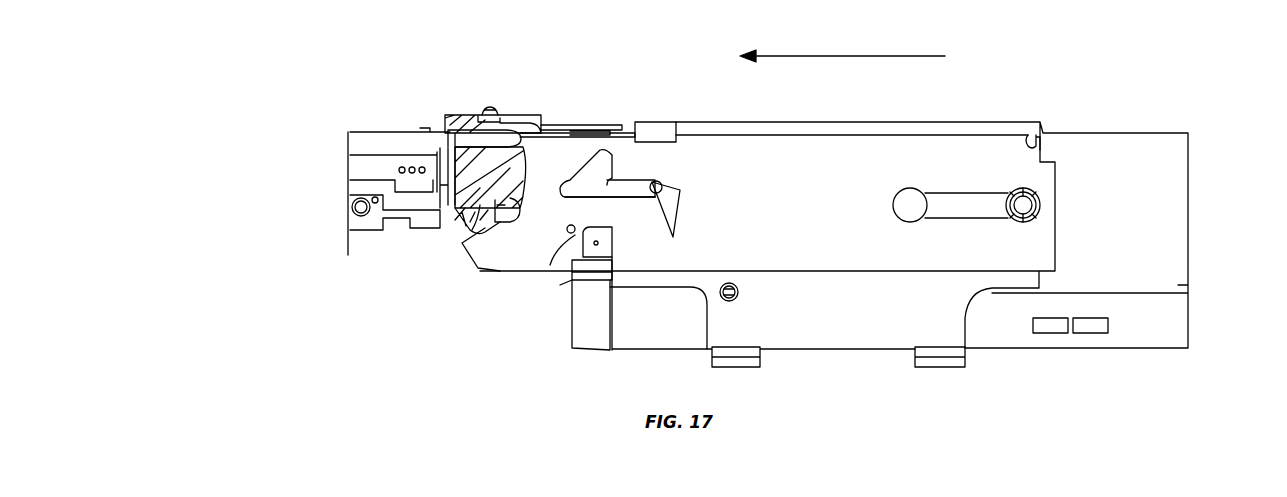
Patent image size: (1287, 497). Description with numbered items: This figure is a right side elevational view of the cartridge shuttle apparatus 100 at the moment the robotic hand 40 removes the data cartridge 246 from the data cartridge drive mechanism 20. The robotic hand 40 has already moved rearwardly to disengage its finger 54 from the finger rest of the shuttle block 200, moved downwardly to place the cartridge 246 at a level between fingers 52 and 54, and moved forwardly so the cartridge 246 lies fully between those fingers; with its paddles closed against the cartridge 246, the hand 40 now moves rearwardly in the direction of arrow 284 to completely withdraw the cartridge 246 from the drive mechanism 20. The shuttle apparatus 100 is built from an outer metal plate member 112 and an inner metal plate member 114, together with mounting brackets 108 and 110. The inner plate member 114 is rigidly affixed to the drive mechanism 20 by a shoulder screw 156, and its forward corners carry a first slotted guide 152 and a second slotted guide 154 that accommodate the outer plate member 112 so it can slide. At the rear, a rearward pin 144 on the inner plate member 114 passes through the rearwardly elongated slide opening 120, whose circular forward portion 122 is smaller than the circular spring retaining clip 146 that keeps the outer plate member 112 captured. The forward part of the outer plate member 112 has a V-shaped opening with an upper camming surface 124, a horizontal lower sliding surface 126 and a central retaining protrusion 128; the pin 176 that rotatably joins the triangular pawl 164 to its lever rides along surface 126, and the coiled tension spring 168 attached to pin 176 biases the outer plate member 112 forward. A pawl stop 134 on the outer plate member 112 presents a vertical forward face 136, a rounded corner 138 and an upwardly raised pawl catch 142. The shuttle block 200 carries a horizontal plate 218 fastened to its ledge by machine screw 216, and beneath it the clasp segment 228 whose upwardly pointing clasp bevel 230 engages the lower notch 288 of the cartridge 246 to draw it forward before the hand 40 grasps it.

The data cartridge drive mechanism 20 is at (1175, 328).
The robotic hand 40 is at (370, 125).
The finger 52 is at (500, 225).
The finger 54 is at (448, 138).
The cartridge shuttle apparatus 100 is at (940, 110).
The mounting bracket 108 is at (963, 368).
The mounting bracket 110 is at (758, 362).
The outer metal plate member 112 is at (852, 191).
The inner metal plate member 114 is at (826, 94).
The slide opening 120 is at (985, 192).
The circular forward portion 122 is at (925, 192).
The upper camming surface 124 is at (585, 165).
The horizontal lower sliding surface 126 is at (612, 200).
The central retaining protrusion 128 is at (612, 165).
The pawl stop 134 is at (612, 250).
The vertical forward face 136 is at (575, 275).
The rounded corner 138 is at (575, 240).
The pawl catch 142 is at (610, 248).
The rearward pin 144 is at (1030, 196).
The circular spring retaining clip 146 is at (1032, 214).
The first slotted guide 152 is at (655, 125).
The second slotted guide 154 is at (585, 278).
The shoulder screw 156 is at (737, 286).
The pawl 164 is at (678, 210).
The coiled tension spring 168 is at (1038, 135).
The pin 176 is at (662, 185).
The shuttle block 200 is at (530, 115).
The machine screw 216 is at (490, 107).
The horizontal plate 218 is at (575, 124).
The clasp segment 228 is at (462, 231).
The clasp bevel 230 is at (478, 258).
The data cartridge 246 is at (506, 173).
The arrow 284 is at (812, 55).
The lower notch 288 is at (508, 222).